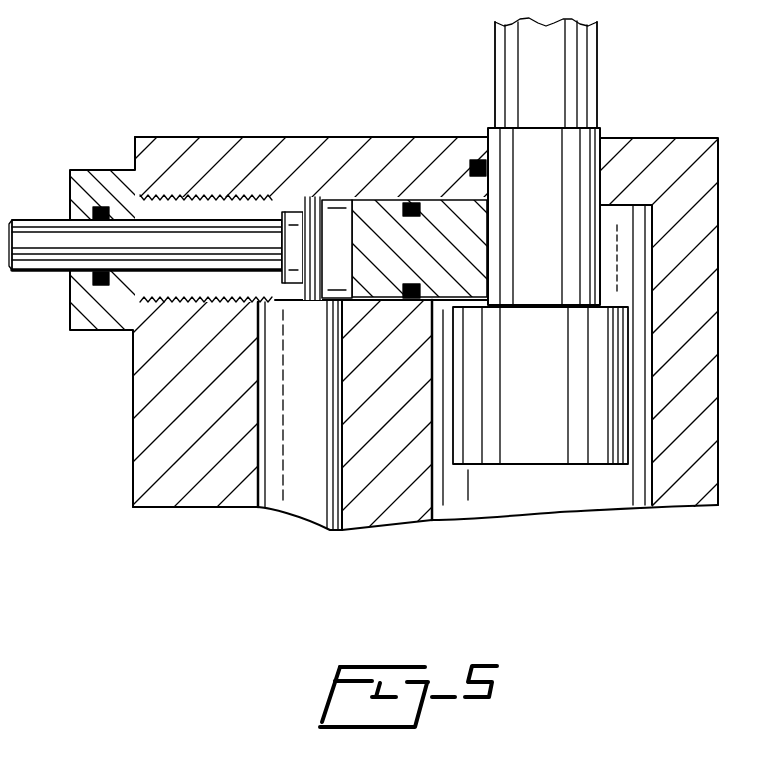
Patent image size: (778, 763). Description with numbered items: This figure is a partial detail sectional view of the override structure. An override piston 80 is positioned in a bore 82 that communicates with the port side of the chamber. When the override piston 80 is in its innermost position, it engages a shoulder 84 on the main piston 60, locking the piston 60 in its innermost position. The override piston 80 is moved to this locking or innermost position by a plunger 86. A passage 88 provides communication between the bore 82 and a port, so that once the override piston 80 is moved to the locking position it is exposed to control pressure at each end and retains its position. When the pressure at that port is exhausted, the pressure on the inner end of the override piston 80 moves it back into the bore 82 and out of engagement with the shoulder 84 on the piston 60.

The piston 60 is at (550, 253).
The override piston 80 is at (368, 244).
The bore 82 is at (350, 200).
The shoulder 84 is at (467, 298).
The plunger 86 is at (28, 220).
The passage 88 is at (293, 470).